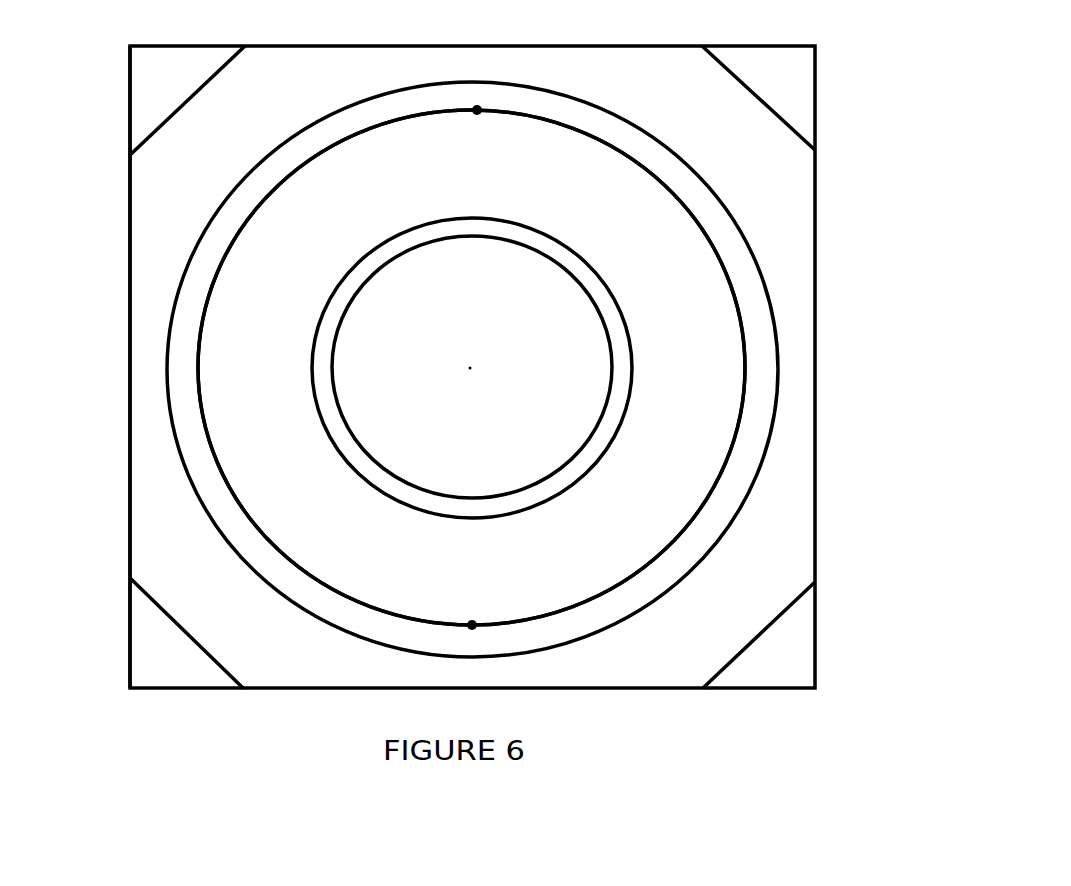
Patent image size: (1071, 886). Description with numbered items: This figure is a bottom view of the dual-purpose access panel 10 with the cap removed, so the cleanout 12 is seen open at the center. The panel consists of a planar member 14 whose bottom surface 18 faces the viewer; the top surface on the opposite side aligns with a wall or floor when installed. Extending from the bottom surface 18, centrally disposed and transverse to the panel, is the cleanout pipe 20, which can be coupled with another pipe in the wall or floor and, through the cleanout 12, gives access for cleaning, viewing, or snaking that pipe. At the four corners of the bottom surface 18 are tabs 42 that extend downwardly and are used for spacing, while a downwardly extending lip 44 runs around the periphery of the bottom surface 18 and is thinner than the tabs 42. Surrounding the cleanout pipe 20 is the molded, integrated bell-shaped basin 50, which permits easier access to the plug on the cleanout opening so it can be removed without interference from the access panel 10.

The access panel 10 is at (845, 63).
The cleanout 12 is at (578, 360).
The planar member 14 is at (785, 465).
The bottom surface 18 is at (787, 185).
The cleanout pipe 20 is at (580, 458).
The tabs 42 is at (140, 93).
The lip 44 is at (138, 450).
The basin 50 is at (333, 568).